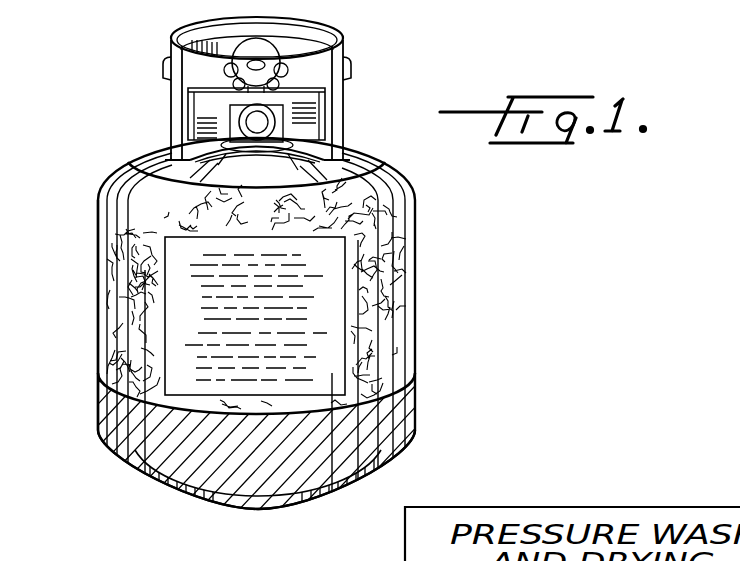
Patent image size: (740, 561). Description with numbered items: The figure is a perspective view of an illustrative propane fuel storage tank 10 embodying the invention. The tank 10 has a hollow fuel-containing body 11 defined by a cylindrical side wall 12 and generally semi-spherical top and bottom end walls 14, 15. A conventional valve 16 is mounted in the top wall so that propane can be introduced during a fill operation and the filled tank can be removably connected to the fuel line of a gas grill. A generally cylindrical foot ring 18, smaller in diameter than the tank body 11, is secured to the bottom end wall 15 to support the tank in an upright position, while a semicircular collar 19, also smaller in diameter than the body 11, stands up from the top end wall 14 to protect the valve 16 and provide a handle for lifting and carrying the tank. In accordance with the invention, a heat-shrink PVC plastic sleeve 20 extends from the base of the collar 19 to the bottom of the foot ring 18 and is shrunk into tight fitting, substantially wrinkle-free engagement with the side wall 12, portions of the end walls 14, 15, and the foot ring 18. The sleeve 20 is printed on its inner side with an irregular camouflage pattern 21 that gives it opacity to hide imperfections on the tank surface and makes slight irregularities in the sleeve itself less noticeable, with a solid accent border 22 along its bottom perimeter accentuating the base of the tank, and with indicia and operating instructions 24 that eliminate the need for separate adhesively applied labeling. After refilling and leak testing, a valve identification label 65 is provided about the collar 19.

The propane fuel storage tank 10 is at (338, 323).
The hollow fuel-containing body 11 is at (210, 90).
The cylindrical side wall 12 is at (64, 315).
The top end wall 14 is at (220, 175).
The bottom end wall 15 is at (230, 469).
The valve 16 is at (318, 50).
The foot ring 18 is at (243, 494).
The collar 19 is at (325, 101).
The plastic sleeve 20 is at (309, 323).
The camouflage pattern 21 is at (298, 334).
The accent border 22 is at (285, 450).
The indicia and operating instructions 24 is at (339, 316).
The valve identification label 65 is at (339, 127).